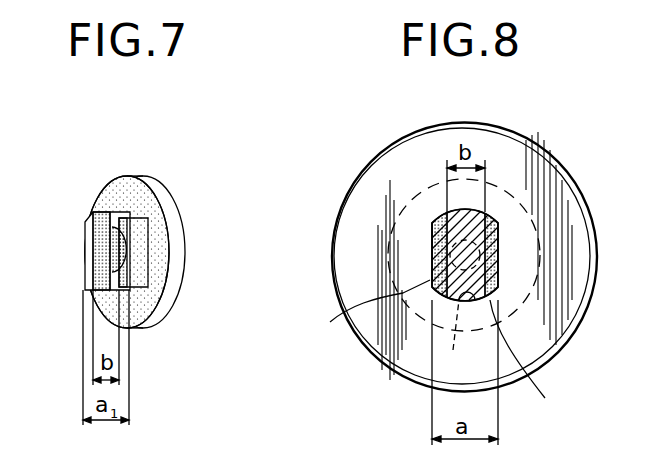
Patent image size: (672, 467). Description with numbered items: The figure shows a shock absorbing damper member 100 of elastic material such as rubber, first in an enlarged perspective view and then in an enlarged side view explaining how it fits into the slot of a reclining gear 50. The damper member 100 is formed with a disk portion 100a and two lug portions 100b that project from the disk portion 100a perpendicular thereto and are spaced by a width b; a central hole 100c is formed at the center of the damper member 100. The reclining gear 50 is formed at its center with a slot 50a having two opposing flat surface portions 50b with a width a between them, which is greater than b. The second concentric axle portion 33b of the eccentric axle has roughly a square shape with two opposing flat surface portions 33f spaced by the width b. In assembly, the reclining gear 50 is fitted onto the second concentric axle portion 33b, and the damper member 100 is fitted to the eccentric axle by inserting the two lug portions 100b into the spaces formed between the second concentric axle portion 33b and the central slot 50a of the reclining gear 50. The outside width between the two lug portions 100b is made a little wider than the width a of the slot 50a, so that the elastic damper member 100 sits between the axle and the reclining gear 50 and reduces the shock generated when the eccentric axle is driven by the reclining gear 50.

In FIG. 7, the damper member 100 is at (157, 172).
In FIG. 8, the damper member 100 is at (432, 257).
In FIG. 7, the disk portion 100a is at (110, 186).
In FIG. 7, the lug portions 100b is at (85, 265).
In FIG. 8, the lug portions 100b is at (608, 264).
In FIG. 8, the central hole 100c is at (461, 339).
In FIG. 8, the reclining gear 50 is at (392, 366).
In FIG. 8, the slot 50a is at (536, 360).
In FIG. 8, the flat surface portions 50b is at (498, 293).
In FIG. 8, the second concentric axle portion 33b is at (450, 270).
In FIG. 8, the flat surface portions 33f is at (498, 233).